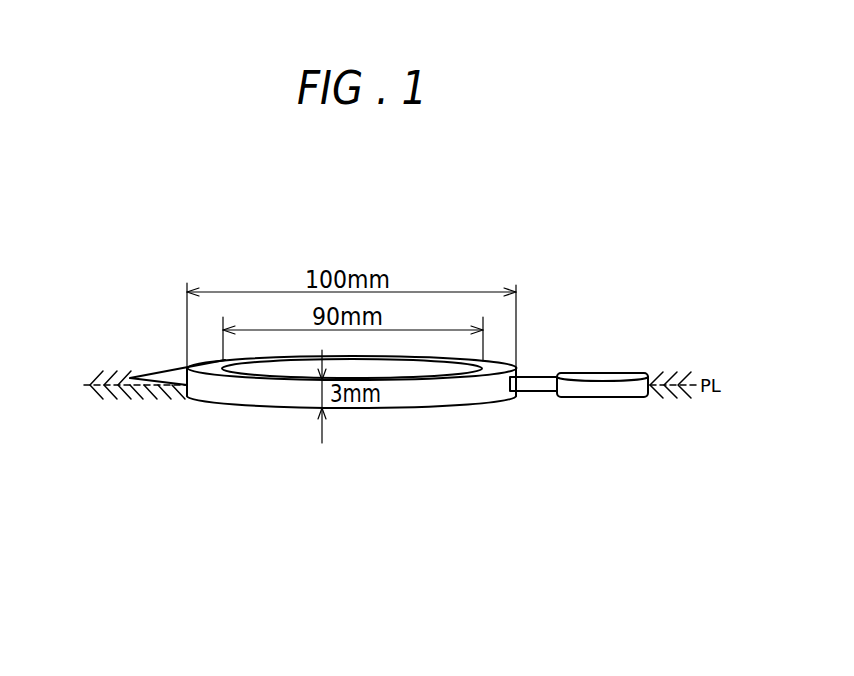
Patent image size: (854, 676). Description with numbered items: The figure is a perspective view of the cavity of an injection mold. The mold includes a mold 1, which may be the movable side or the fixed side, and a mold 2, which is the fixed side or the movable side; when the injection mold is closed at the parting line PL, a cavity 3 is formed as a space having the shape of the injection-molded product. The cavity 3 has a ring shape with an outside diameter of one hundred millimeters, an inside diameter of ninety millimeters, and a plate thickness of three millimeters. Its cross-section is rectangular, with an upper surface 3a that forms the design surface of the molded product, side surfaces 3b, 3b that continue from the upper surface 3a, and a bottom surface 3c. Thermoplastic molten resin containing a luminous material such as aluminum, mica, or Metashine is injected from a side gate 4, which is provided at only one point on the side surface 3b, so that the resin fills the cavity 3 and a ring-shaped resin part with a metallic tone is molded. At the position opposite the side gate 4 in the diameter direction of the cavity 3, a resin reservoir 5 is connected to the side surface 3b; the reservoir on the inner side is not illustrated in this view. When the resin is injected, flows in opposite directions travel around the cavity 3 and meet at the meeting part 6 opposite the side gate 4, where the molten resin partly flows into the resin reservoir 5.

The mold 1 is at (118, 366).
The mold 2 is at (118, 407).
The cavity 3 is at (382, 422).
The upper surface 3a is at (408, 380).
The side surface 3b is at (279, 376).
The bottom surface 3c is at (370, 410).
The side gate 4 is at (161, 367).
The resin reservoir 5 is at (605, 372).
The meeting part 6 is at (498, 371).